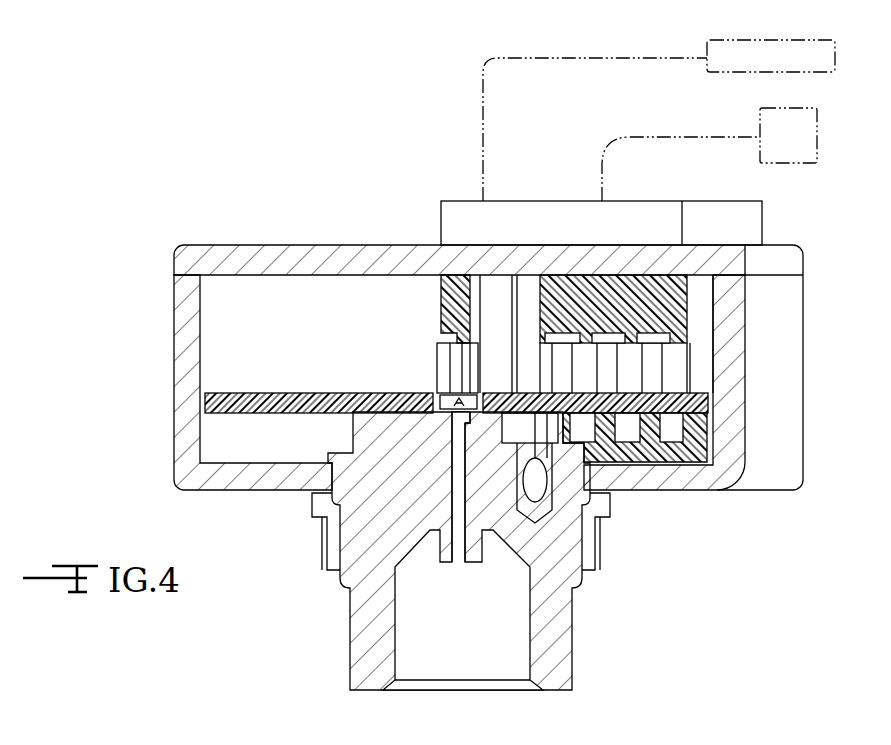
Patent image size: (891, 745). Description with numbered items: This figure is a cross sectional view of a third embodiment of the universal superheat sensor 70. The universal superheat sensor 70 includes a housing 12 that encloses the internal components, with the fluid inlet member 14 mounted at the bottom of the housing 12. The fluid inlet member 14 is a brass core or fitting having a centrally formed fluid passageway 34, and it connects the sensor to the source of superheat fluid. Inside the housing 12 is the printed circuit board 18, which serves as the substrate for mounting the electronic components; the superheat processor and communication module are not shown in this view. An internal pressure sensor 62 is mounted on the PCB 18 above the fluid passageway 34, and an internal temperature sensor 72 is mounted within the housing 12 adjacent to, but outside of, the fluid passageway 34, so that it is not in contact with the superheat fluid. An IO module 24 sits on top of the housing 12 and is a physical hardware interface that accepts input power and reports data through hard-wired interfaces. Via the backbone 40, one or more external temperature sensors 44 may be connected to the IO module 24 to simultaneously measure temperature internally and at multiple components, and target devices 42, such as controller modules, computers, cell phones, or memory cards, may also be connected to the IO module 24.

The housing 12 is at (172, 381).
The fluid inlet member 14 is at (360, 631).
The printed circuit board 18 is at (708, 403).
The IO module 24 is at (748, 222).
The fluid passageway 34 is at (455, 530).
The backbone 40 is at (483, 75).
The target devices 42 is at (817, 127).
The external temperature sensor 44 is at (834, 60).
The internal pressure sensor 62 is at (443, 393).
The universal superheat sensor 70 is at (122, 256).
The internal temperature sensor 72 is at (537, 482).